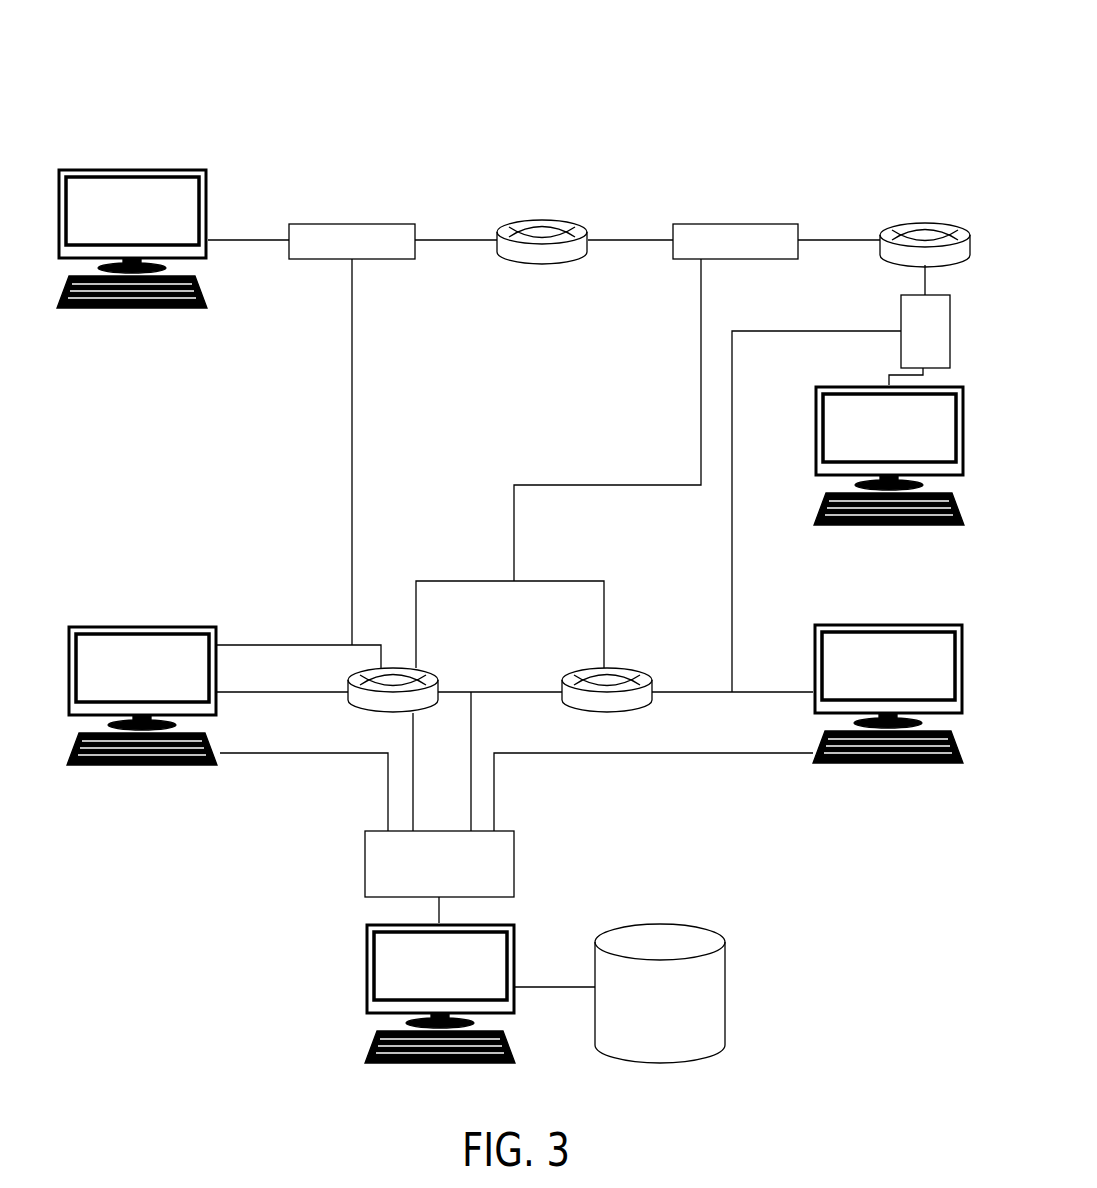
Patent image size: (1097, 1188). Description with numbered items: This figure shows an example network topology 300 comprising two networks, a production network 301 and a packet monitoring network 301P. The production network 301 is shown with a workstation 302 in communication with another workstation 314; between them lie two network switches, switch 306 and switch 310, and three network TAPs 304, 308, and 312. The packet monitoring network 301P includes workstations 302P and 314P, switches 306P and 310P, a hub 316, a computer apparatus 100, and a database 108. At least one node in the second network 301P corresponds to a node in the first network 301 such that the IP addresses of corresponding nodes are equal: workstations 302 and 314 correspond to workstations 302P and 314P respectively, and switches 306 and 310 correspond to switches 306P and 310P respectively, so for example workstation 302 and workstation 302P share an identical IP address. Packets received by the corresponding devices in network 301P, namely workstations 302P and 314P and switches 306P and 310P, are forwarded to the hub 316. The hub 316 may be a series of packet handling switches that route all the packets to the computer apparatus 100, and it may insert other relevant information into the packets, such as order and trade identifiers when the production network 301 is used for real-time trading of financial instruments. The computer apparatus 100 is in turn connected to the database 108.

The system 300 is at (557, 44).
The network 301 is at (832, 180).
The network 301P is at (296, 822).
The workstation 302 is at (210, 200).
The workstation 302P is at (120, 623).
The network TAP 304 is at (352, 223).
The switch 306 is at (544, 220).
The switch 306P is at (430, 668).
The network TAP 308 is at (745, 223).
The switch 310 is at (928, 222).
The switch 310P is at (625, 668).
The network TAP 312 is at (900, 308).
The workstation 314 is at (814, 433).
The workstation 314P is at (813, 652).
The hub 316 is at (515, 865).
The computer apparatus 100 is at (363, 965).
The database 108 is at (726, 984).